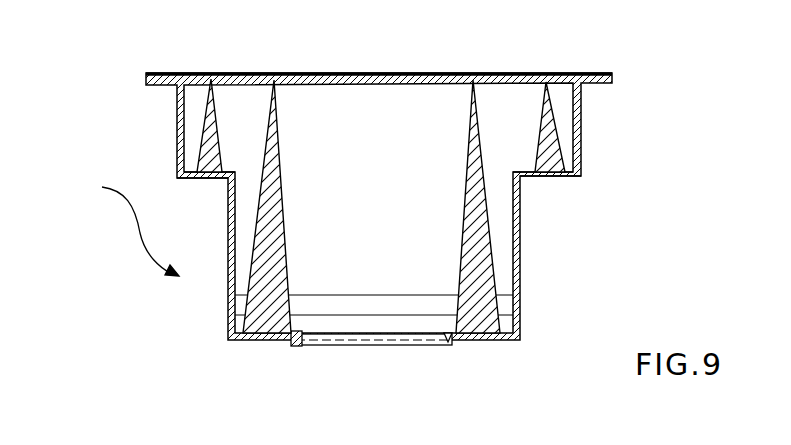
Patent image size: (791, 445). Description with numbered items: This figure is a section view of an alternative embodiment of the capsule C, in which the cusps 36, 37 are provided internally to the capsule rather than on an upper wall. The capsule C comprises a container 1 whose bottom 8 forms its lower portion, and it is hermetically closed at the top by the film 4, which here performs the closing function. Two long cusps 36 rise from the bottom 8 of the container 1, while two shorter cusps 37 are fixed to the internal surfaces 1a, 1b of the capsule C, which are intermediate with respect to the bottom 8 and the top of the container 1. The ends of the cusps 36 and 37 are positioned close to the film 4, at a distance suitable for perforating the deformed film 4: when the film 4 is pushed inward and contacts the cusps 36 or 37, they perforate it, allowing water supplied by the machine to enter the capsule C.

The container 1 is at (520, 238).
The internal surface 1a is at (192, 178).
The internal surface 1b is at (565, 177).
The film 4 is at (300, 73).
The bottom 8 is at (236, 341).
The cusps 36 is at (272, 268).
The cusps 37 is at (213, 132).
The capsule C is at (127, 223).